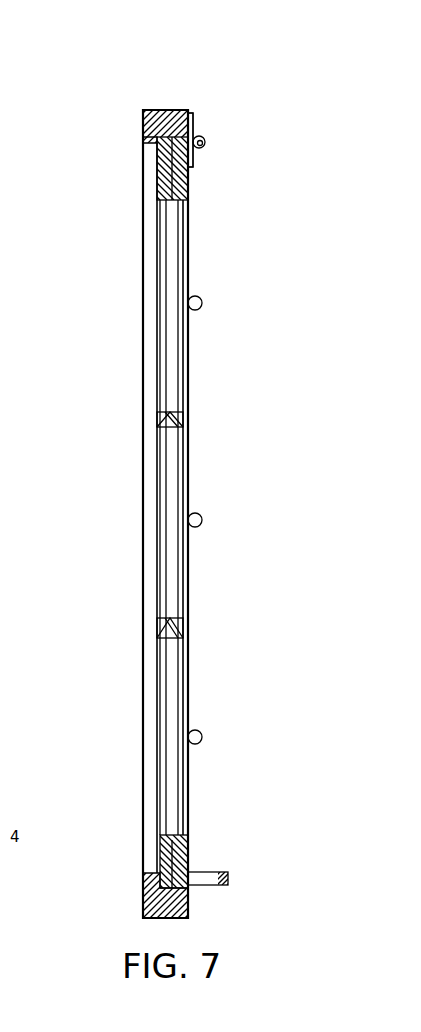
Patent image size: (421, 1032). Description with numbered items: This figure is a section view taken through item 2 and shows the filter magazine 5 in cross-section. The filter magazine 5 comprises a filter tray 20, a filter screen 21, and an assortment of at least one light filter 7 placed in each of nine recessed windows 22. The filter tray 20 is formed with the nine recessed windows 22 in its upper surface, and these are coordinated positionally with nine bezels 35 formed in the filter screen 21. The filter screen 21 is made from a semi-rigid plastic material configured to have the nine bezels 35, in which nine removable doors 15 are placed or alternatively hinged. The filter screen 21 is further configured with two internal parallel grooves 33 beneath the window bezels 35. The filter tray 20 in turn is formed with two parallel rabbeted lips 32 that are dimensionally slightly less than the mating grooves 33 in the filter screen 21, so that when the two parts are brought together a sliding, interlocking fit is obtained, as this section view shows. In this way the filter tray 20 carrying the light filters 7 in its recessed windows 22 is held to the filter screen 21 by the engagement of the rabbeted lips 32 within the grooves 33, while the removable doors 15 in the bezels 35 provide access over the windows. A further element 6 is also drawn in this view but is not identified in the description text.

The housing frame 2 is at (143, 112).
The upper hatched block 20 is at (160, 186).
The lip 33 is at (191, 112).
The lip 32 is at (190, 140).
The ball 6 is at (206, 138).
The ball 15 is at (201, 298).
The plate 5 is at (158, 323).
The spacer 22 is at (166, 420).
The plate 7 is at (168, 558).
The spacer 35 is at (178, 640).
The lower block 21 is at (190, 866).